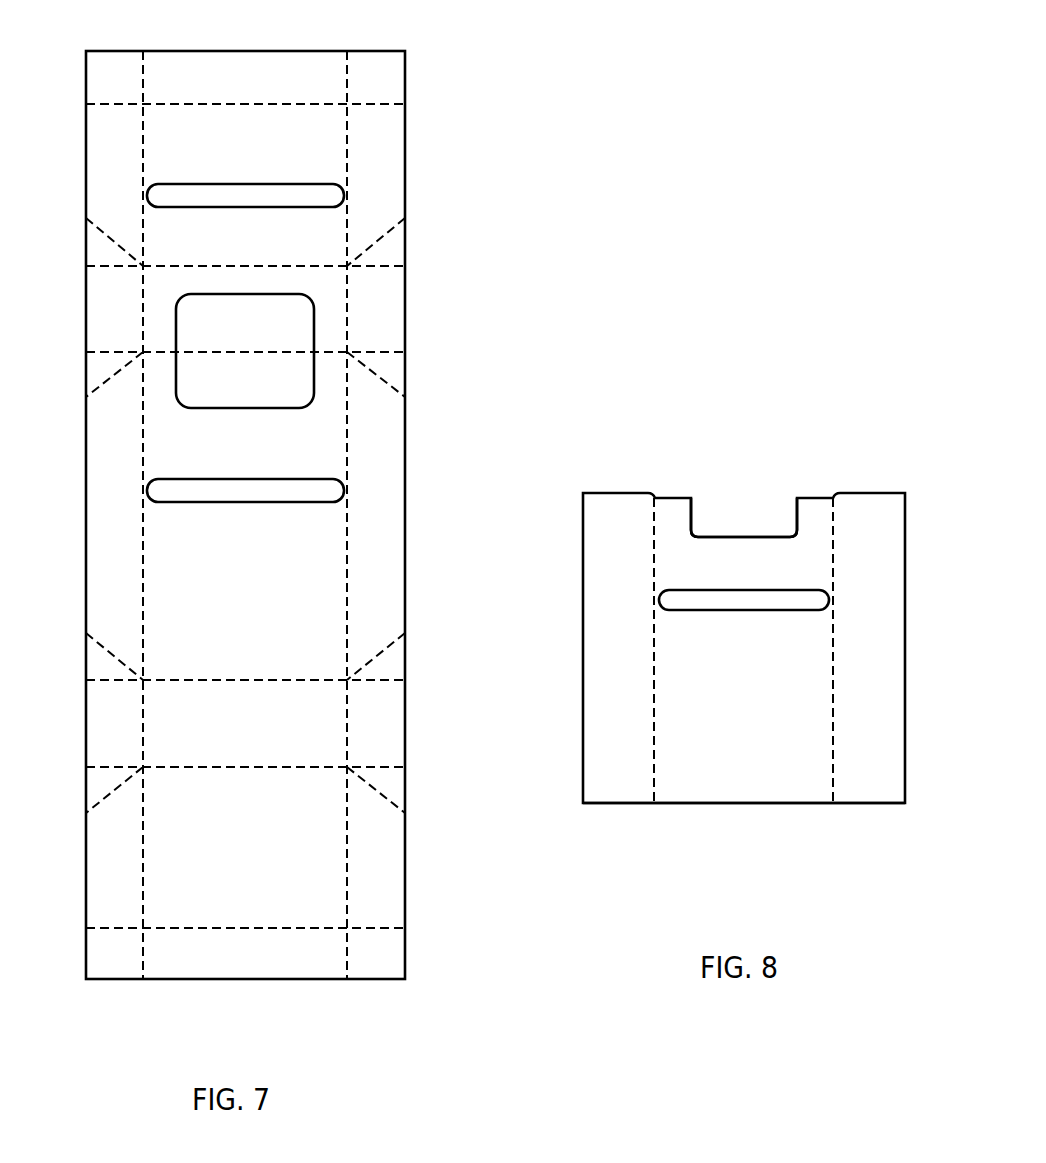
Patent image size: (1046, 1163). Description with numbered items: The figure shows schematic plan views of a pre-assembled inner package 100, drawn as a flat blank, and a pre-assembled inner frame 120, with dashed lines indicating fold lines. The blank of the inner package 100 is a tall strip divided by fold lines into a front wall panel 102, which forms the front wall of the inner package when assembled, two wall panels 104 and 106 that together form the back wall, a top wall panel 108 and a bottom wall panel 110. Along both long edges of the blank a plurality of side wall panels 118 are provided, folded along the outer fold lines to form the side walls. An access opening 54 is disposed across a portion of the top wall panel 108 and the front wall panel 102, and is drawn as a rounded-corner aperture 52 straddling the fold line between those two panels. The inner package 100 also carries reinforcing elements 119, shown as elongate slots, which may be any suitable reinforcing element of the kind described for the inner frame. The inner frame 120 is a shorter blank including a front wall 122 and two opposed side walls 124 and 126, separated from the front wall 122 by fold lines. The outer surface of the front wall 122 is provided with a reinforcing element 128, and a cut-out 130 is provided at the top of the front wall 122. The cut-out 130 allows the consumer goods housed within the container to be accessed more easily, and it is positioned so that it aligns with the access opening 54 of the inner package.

In FIG. 7, the pre-assembled inner package 100 is at (442, 68).
In FIG. 7, the front wall panel 102 is at (158, 542).
In FIG. 7, the wall panel 104 is at (158, 129).
In FIG. 7, the wall panel 106 is at (158, 899).
In FIG. 7, the top wall panel 108 is at (158, 316).
In FIG. 7, the bottom wall panel 110 is at (158, 727).
In FIG. 7, the side wall panels 118 is at (95, 463).
In FIG. 7, the reinforcing elements 119 is at (158, 194).
In FIG. 7, the window 52 is at (176, 395).
In FIG. 7, the access opening 54 is at (274, 290).
In FIG. 8, the inner frame 120 is at (657, 438).
In FIG. 8, the front wall 122 is at (742, 793).
In FIG. 8, the side wall 124 is at (595, 540).
In FIG. 8, the side wall 126 is at (876, 505).
In FIG. 8, the reinforcing element 128 is at (660, 598).
In FIG. 8, the cut-out 130 is at (746, 508).